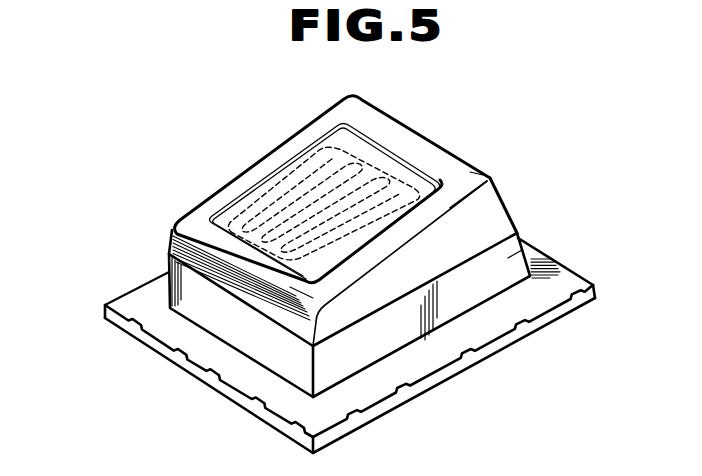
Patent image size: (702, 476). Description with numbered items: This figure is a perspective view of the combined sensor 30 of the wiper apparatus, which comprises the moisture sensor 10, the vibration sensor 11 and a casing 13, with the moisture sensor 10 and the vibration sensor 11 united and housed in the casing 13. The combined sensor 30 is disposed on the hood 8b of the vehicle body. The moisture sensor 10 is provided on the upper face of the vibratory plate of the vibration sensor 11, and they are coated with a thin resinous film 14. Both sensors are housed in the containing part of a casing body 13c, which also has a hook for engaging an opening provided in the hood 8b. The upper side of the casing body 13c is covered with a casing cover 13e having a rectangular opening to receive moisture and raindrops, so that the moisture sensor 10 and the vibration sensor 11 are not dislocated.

The hood 8b is at (560, 278).
The casing 13 is at (182, 224).
The casing body 13c is at (541, 247).
The casing cover 13e is at (474, 173).
The combined sensor 30 is at (433, 134).
The thin resinous film 14 is at (335, 137).
The moisture sensor 10 is at (273, 180).
The vibration sensor 11 is at (362, 148).